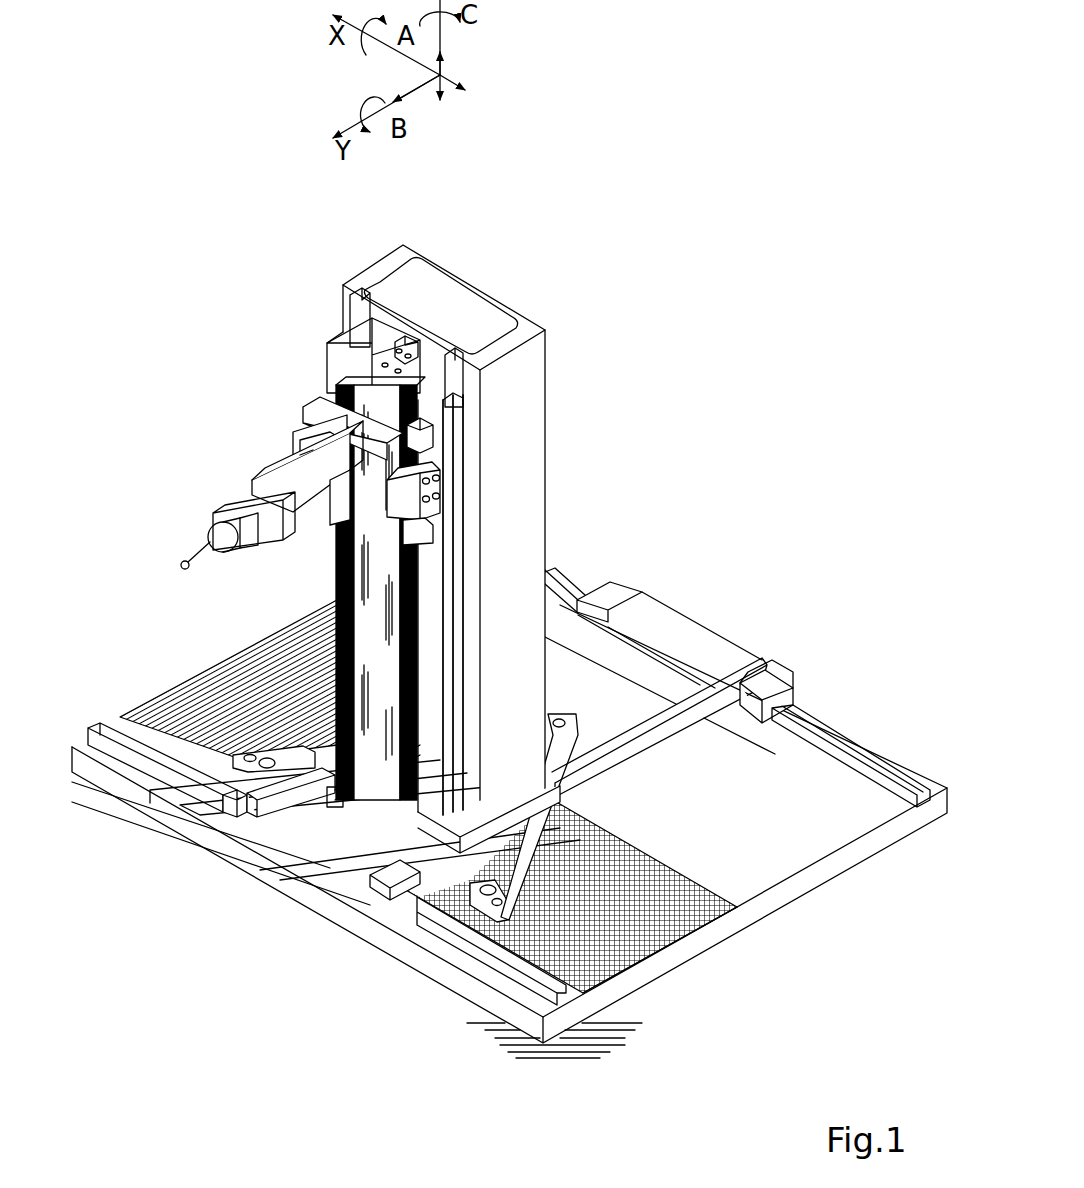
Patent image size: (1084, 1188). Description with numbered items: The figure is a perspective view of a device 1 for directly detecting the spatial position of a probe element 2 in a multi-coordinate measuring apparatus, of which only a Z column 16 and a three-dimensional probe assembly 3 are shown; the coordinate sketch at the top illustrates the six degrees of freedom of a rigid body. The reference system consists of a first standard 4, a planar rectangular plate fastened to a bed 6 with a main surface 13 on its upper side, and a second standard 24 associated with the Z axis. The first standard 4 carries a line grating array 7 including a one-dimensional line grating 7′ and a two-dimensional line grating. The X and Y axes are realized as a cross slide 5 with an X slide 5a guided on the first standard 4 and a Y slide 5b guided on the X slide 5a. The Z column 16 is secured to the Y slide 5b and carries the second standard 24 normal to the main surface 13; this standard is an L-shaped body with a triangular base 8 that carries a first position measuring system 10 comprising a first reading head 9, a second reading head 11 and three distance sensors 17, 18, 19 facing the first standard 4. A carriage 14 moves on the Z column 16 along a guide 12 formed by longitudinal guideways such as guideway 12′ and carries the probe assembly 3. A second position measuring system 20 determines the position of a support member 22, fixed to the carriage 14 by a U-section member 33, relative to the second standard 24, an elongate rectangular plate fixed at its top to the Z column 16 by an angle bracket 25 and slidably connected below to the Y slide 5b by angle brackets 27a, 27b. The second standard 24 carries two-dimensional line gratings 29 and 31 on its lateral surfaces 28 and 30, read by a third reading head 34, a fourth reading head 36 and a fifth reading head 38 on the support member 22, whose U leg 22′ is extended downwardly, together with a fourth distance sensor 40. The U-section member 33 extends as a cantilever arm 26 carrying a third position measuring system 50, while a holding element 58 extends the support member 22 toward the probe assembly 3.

The device 1 is at (305, 395).
The probe element 2 is at (200, 570).
The three-dimensional probe assembly 3 is at (213, 497).
The first standard 4 is at (850, 860).
The cross slide 5 is at (300, 903).
The X slide 5a is at (653, 617).
The Y slide 5b is at (700, 900).
The bed 6 is at (580, 1040).
The two-dimensional line grating array 7 is at (655, 965).
The one-dimensional line grating 7′ is at (200, 722).
The triangular base 8 is at (570, 710).
The first incremental reading head 9 is at (473, 893).
The first position measuring system 10 is at (220, 777).
The second incremental reading head 11 is at (245, 745).
The guide 12 is at (336, 300).
The longitudinal guideway 12′ is at (352, 310).
The main surface 13 is at (765, 785).
The carriage 14 is at (470, 535).
The Z column 16 is at (528, 392).
The distance sensor 17 is at (493, 907).
The distance sensor 18 is at (555, 742).
The distance sensor 19 is at (235, 737).
The second position measuring system 20 is at (285, 405).
The support member 22 is at (290, 418).
The U leg 22′ is at (342, 522).
The second standard 24 is at (375, 600).
The angle bracket 25 is at (405, 350).
The cantilever arm 26 is at (300, 515).
The angle bracket 27a is at (417, 898).
The angle bracket 27b is at (243, 840).
The lateral surface 28 is at (378, 833).
The two-dimensional line grating 29 is at (340, 830).
The lateral surface 30 is at (327, 807).
The two-dimensional line grating 31 is at (337, 640).
The U-section member 33 is at (453, 487).
The third reading head 34 is at (435, 445).
The fourth reading head 36 is at (465, 565).
The fifth reading head 38 is at (365, 362).
The fourth distance sensor 40 is at (435, 428).
The third position measuring system 50 is at (213, 507).
The holding element 58 is at (305, 458).